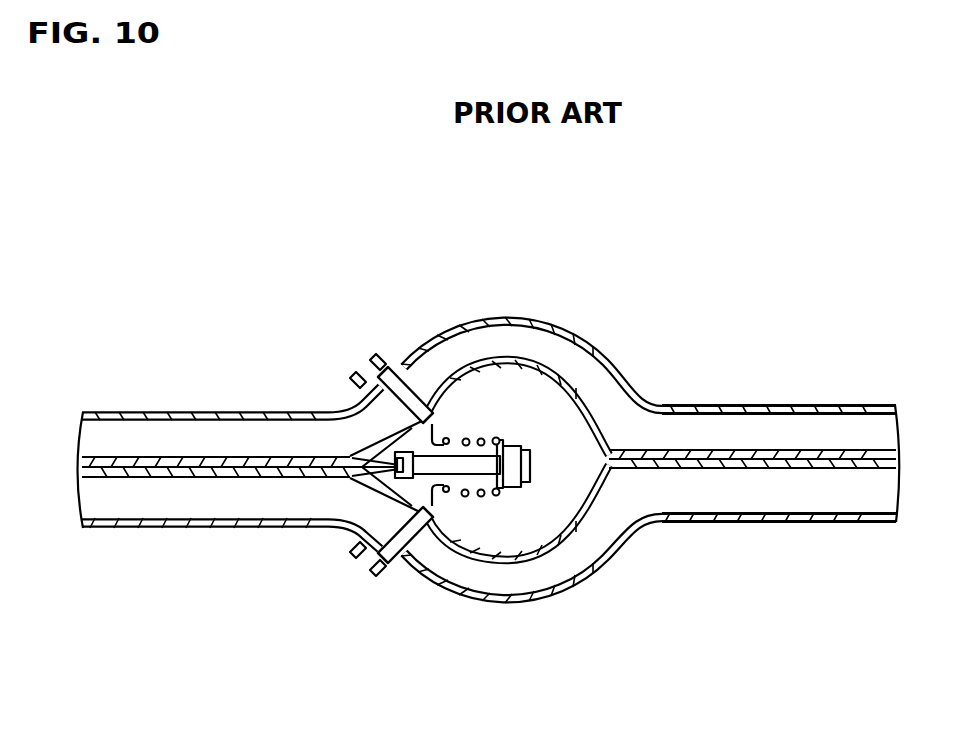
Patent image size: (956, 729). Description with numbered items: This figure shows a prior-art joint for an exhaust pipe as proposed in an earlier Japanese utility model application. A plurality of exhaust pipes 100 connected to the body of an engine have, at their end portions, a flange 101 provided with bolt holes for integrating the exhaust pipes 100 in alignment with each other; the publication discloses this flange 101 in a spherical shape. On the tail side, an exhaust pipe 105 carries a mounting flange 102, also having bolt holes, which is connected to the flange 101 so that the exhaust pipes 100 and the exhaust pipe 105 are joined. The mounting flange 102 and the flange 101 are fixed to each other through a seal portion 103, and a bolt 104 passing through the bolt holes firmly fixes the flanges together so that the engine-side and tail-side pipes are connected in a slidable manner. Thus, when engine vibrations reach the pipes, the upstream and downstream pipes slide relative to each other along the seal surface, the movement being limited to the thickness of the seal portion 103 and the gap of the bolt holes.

The exhaust pipes 100 is at (158, 411).
The flange 101 is at (353, 388).
The mounting flange 102 is at (383, 370).
The seal portion 103 is at (377, 563).
The bolt 104 is at (527, 462).
The exhaust pipe 105 is at (772, 403).